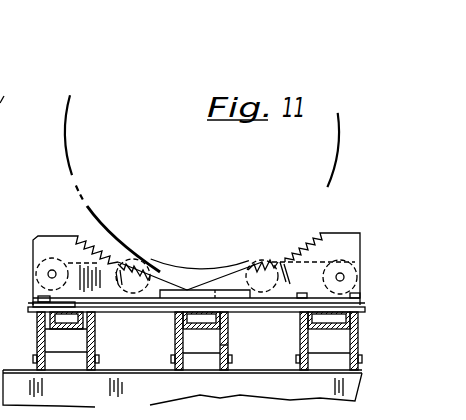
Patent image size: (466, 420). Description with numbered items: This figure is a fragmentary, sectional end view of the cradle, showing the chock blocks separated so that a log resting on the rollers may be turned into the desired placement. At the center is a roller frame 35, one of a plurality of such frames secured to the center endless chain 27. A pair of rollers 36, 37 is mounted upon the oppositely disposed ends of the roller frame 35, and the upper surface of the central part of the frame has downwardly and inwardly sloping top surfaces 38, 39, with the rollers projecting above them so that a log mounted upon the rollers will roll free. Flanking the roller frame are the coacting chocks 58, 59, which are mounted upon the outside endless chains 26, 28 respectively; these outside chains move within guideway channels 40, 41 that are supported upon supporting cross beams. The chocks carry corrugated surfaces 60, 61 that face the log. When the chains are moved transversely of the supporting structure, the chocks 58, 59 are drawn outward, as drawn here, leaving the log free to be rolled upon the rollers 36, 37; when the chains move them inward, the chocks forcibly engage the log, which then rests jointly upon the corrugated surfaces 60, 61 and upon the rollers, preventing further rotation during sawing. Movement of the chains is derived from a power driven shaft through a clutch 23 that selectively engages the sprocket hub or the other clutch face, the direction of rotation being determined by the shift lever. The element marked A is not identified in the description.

The roller frame 35 is at (8, 119).
The chock 59 is at (38, 243).
The corrugated surface 60 is at (88, 248).
The roller 37 is at (142, 256).
The sloping top surface 38 is at (171, 263).
The sloping top surface 39 is at (244, 262).
The roller 36 is at (258, 257).
The chock 58 is at (327, 234).
The corrugated surface 61 is at (283, 262).
The endless chain 28 is at (40, 323).
The guideway channel 41 is at (94, 338).
The endless chain 27 is at (187, 341).
The post A is at (225, 346).
The endless chain 26 is at (300, 315).
The guideway channel 40 is at (298, 355).
The clutch 23 is at (182, 395).